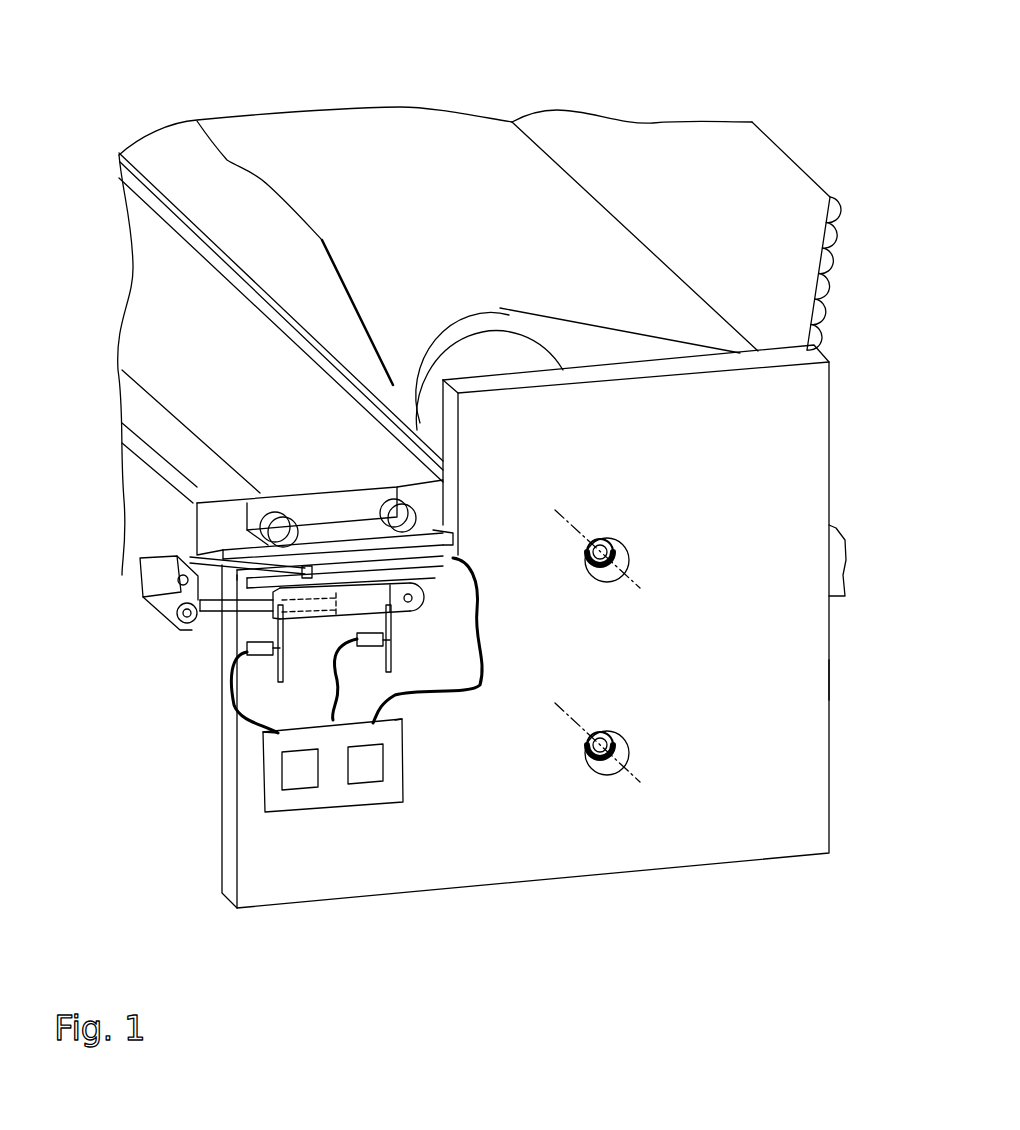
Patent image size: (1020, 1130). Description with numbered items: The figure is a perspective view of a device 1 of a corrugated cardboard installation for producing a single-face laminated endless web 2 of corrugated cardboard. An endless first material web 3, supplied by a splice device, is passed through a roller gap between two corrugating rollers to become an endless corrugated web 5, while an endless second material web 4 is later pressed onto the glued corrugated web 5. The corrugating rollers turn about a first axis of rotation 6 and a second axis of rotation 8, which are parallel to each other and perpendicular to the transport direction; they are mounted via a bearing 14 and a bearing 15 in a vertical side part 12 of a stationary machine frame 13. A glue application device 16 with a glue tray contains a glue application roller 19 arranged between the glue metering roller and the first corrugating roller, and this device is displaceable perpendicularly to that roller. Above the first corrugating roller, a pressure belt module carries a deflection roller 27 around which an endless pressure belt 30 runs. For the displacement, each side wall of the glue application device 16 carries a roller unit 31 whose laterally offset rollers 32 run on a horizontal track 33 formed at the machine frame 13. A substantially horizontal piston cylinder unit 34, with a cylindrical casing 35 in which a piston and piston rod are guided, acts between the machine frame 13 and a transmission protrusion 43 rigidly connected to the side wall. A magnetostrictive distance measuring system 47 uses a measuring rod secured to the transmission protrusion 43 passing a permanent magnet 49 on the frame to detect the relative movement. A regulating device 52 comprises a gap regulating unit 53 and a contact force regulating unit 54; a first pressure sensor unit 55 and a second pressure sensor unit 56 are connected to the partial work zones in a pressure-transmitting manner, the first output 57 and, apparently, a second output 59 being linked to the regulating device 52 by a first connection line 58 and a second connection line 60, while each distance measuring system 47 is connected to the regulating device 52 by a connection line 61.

The device 1 is at (740, 915).
The single-face laminated endless web of corrugated cardboard 2 is at (725, 142).
The endless first material web 3 is at (837, 567).
The endless second material web 4 is at (228, 168).
The endless corrugated web 5 is at (831, 265).
The first axis of rotation 6 is at (573, 523).
The second axis of rotation 8 is at (636, 786).
The side part 12 is at (825, 678).
The machine frame 13 is at (843, 727).
The bearing 14 is at (627, 545).
The bearing 15 is at (603, 775).
The glue application device 16 is at (158, 428).
The glue application roller 19 is at (150, 333).
The deflection roller 27 is at (460, 340).
The endless pressure belt 30 is at (407, 120).
The roller unit 31 is at (245, 528).
The rollers 32 is at (343, 487).
The track 33 is at (226, 517).
The piston cylinder unit 34 is at (305, 632).
The cylindrical casing 35 is at (390, 603).
The transmission protrusion 43 is at (150, 600).
The distance measuring system 47 is at (190, 556).
The permanent magnet 49 is at (215, 637).
The regulating device 52 is at (327, 812).
The gap regulating unit 53 is at (300, 791).
The contact force regulating unit 54 is at (365, 784).
The first pressure sensor unit 55 is at (245, 656).
The second pressure sensor unit 56 is at (400, 720).
The first output 57 is at (245, 645).
The cable 58 is at (388, 645).
The cable 59 is at (333, 714).
The cable 60 is at (268, 733).
The connection line 61 is at (477, 673).